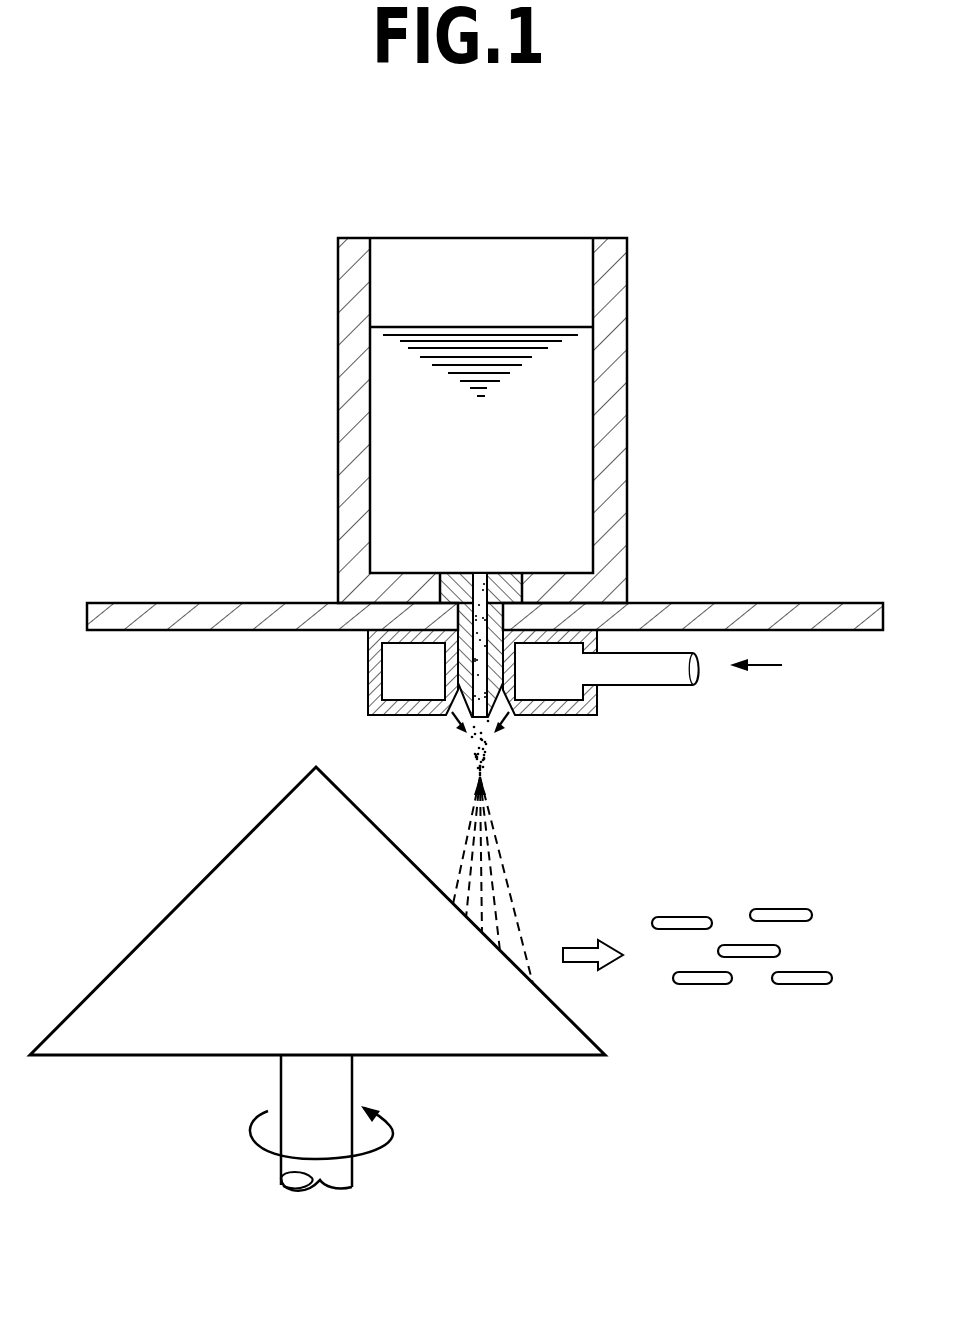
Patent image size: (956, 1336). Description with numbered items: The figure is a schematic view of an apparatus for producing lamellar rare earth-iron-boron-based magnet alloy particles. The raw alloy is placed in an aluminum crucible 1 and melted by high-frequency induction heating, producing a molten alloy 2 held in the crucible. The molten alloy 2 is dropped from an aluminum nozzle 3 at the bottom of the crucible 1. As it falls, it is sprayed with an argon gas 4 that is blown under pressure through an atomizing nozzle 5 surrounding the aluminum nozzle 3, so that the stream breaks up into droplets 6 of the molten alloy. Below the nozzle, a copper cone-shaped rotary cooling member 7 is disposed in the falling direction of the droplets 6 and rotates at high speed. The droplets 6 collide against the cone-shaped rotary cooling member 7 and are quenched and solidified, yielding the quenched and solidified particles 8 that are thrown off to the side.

The aluminum crucible 1 is at (612, 406).
The molten alloy 2 is at (572, 508).
The aluminum nozzle 3 is at (463, 662).
The argon gas 4 is at (701, 667).
The atomizing nozzle 5 is at (597, 707).
The droplets 6 is at (507, 853).
The cone-shaped rotary cooling member 7 is at (188, 895).
The quenched and solidified particles 8 is at (735, 997).